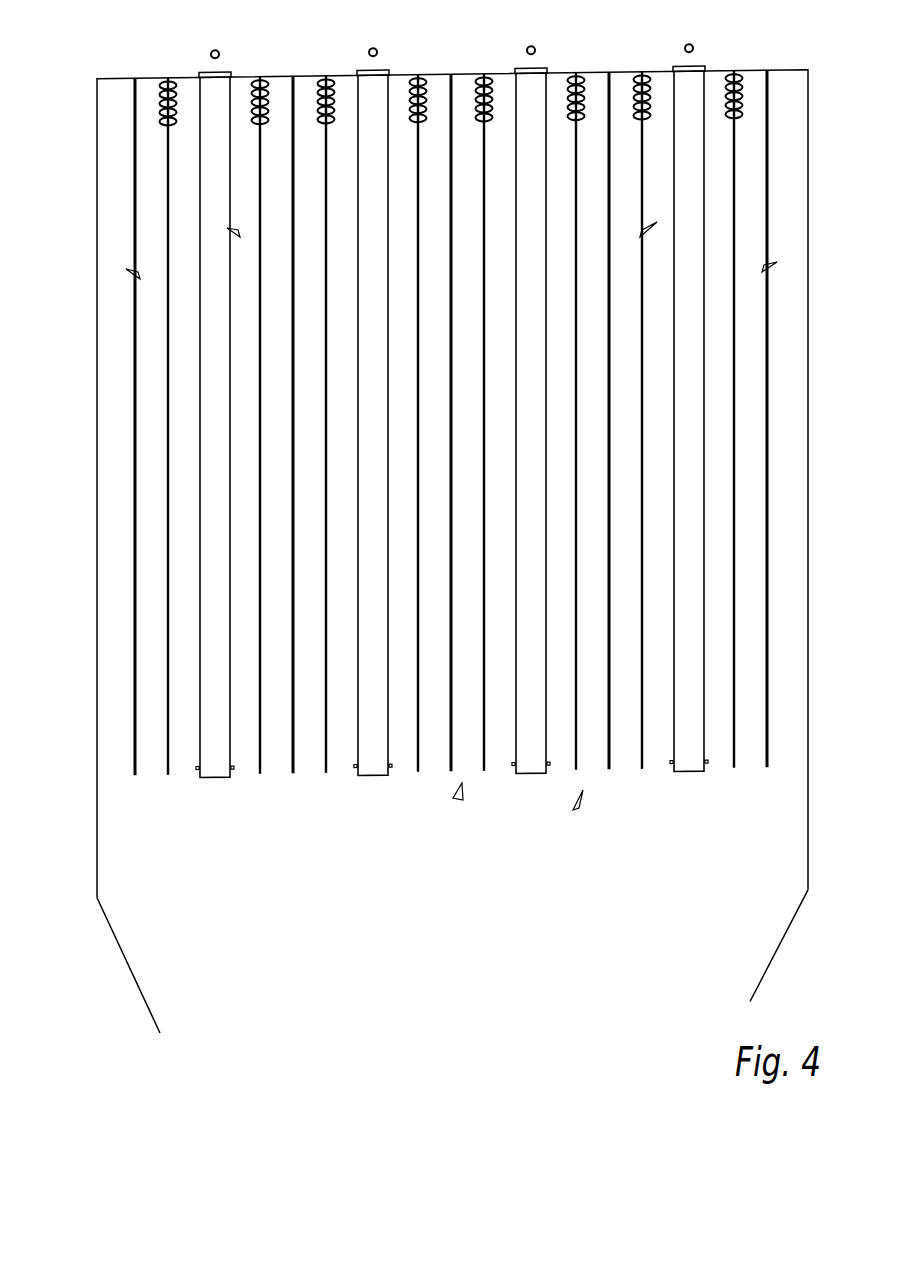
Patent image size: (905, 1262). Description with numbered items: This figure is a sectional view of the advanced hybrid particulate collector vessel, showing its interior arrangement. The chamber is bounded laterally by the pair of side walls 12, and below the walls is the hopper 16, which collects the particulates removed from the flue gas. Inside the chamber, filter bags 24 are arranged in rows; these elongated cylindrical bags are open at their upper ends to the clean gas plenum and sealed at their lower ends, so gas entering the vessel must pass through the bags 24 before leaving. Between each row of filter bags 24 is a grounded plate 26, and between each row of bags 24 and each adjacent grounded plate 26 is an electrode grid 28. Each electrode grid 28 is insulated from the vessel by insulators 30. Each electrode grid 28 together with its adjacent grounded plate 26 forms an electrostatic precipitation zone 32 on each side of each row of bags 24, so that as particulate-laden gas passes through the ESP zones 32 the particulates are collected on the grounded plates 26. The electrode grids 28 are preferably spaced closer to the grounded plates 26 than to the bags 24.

The side wall 12 is at (97, 218).
The hopper 16 is at (125, 960).
The filter bag 24 is at (355, 190).
The grounded plate 26 is at (290, 360).
The electrode grid 28 is at (325, 440).
The insulator 30 is at (168, 82).
The electrostatic precipitation zone 32 is at (277, 247).